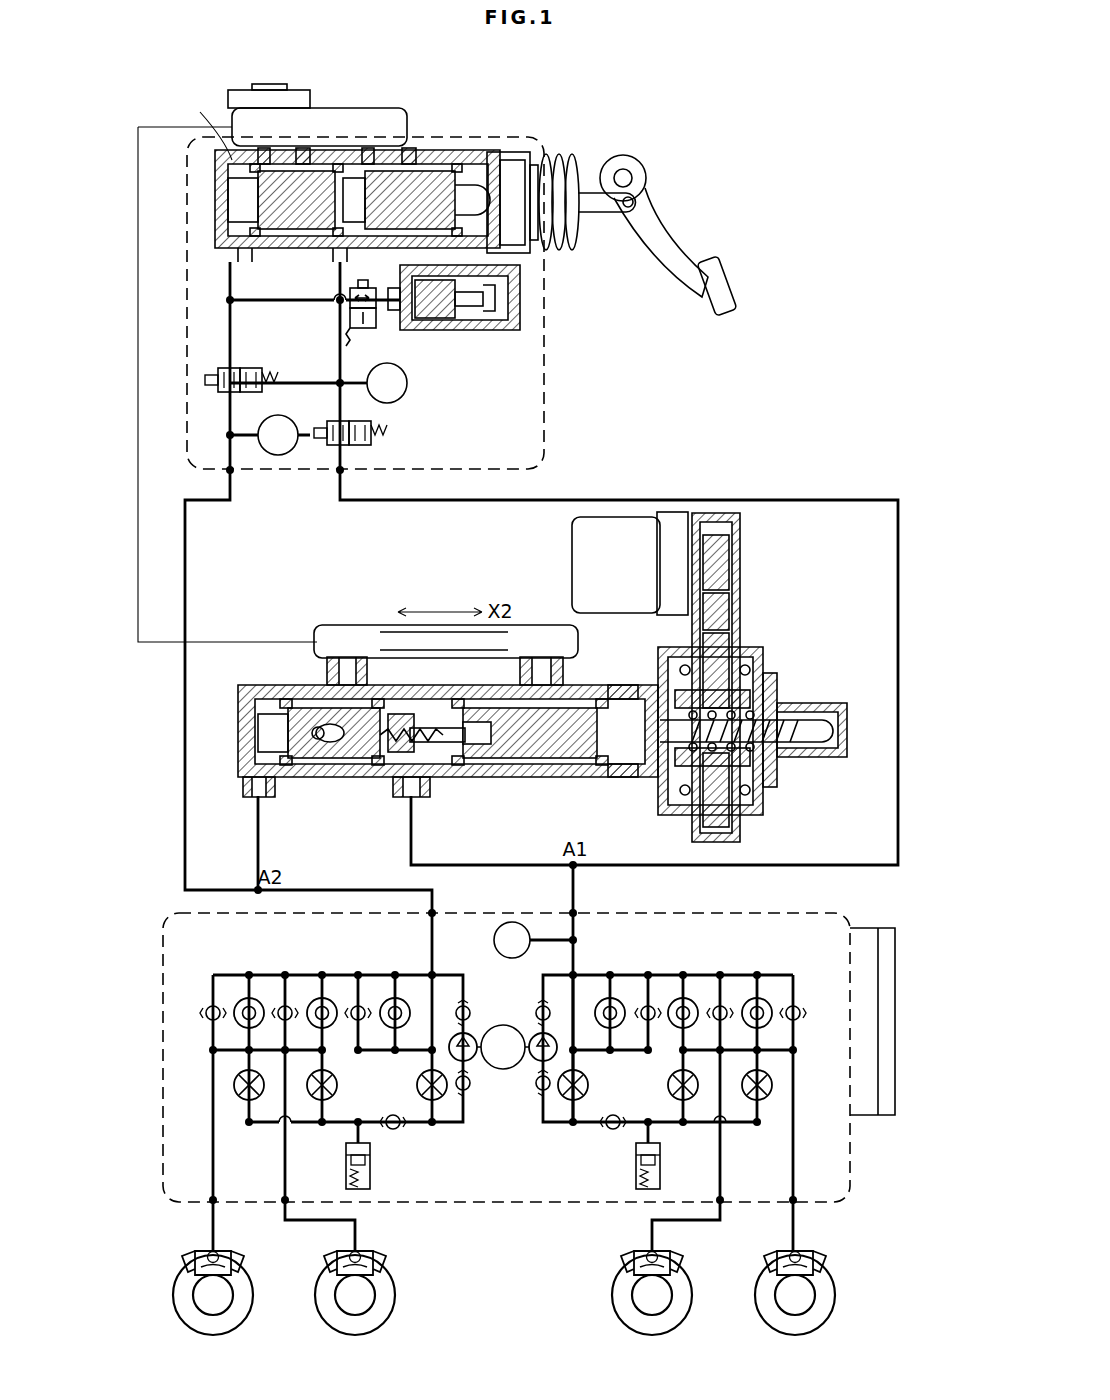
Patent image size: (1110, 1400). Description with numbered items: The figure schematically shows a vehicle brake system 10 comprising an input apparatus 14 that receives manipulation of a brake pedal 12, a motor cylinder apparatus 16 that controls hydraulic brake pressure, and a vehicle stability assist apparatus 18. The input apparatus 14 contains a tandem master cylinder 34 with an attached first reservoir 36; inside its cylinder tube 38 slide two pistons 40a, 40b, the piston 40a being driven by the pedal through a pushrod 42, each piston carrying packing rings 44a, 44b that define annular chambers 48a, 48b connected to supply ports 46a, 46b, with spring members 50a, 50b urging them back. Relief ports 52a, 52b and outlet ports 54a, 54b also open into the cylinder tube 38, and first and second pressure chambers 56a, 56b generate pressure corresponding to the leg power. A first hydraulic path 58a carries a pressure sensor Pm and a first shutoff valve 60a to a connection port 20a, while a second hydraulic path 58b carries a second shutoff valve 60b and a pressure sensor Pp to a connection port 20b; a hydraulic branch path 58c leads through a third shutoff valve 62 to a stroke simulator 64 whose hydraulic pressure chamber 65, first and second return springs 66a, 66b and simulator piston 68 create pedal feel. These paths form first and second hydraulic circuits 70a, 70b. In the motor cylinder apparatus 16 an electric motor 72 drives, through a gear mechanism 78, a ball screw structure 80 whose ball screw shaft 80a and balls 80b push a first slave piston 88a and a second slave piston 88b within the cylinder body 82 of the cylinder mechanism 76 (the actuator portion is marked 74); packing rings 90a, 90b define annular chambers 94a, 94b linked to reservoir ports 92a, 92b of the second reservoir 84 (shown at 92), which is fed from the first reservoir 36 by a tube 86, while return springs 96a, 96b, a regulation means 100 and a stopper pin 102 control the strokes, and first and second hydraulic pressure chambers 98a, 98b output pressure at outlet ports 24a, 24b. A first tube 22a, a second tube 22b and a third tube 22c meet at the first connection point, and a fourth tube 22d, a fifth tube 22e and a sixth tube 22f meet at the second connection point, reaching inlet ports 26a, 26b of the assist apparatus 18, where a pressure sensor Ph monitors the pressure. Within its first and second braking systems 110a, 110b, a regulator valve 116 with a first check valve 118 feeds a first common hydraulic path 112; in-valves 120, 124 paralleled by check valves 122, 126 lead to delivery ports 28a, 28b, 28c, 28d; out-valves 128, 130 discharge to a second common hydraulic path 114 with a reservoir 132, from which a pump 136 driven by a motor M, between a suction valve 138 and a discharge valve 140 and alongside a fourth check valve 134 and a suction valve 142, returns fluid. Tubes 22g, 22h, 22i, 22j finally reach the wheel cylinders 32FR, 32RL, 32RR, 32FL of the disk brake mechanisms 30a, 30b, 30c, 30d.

The vehicle brake system 10 is at (673, 127).
The brake pedal 12 is at (738, 278).
The input apparatus 14 is at (548, 372).
The motor cylinder apparatus 16 is at (761, 577).
The vehicle stability assist apparatus 18 is at (742, 912).
The connection port 20a is at (338, 478).
The connection port 20b is at (232, 478).
The first tube 22a is at (900, 600).
The second tube 22b is at (466, 863).
The third tube 22c is at (575, 888).
The fourth tube 22d is at (184, 677).
The fifth tube 22e is at (256, 846).
The sixth tube 22f is at (394, 888).
The seventh tube 22g is at (798, 1238).
The eighth tube 22h is at (650, 1232).
The ninth tube 22i is at (358, 1232).
The tenth tube 22j is at (210, 1238).
The outlet port 24a is at (418, 800).
The outlet port 24b is at (264, 798).
The inlet port 26a is at (578, 914).
The inlet port 26b is at (436, 912).
The first delivery port 28a is at (797, 1203).
The second delivery port 28b is at (724, 1204).
The third delivery port 28c is at (283, 1205).
The fourth delivery port 28d is at (210, 1203).
The disk brake mechanism 30a is at (841, 1322).
The disk brake mechanism 30b is at (699, 1322).
The disk brake mechanism 30c is at (401, 1322).
The disk brake mechanism 30d is at (257, 1322).
The wheel cylinder 32FL is at (243, 1268).
The wheel cylinder 32RR is at (386, 1268).
The wheel cylinder 32RL is at (683, 1268).
The wheel cylinder 32FR is at (826, 1268).
The master cylinder 34 is at (357, 199).
The first reservoir 36 is at (323, 110).
The cylinder tube 38 is at (462, 162).
The piston 40a is at (428, 185).
The piston 40b is at (290, 185).
The pushrod 42 is at (508, 185).
The packing ring 44a is at (320, 236).
The packing ring 44b is at (272, 236).
The supply port 46a is at (410, 150).
The supply port 46b is at (302, 150).
The annular chamber 48a is at (430, 226).
The annular chamber 48b is at (300, 236).
The spring member 50a is at (348, 160).
The spring member 50b is at (203, 124).
The relief port 52a is at (388, 180).
The relief port 52b is at (265, 172).
The outlet port 54a is at (345, 256).
The outlet port 54b is at (228, 250).
The first pressure chamber 56a is at (395, 200).
The second pressure chamber 56b is at (277, 200).
The first hydraulic path 58a is at (338, 373).
The second hydraulic path 58b is at (210, 299).
The hydraulic branch path 58c is at (290, 303).
The first shutoff valve 60a is at (372, 442).
The second shutoff valve 60b is at (245, 366).
The third shutoff valve 62 is at (378, 324).
The stroke simulator 64 is at (530, 291).
The hydraulic pressure chamber 65 is at (412, 336).
The first return spring 66a is at (498, 336).
The second return spring 66b is at (462, 336).
The simulator piston 68 is at (433, 336).
The first hydraulic circuit 70a is at (653, 487).
The second hydraulic circuit 70b is at (164, 731).
The electric motor 72 is at (572, 545).
The actuator mechanism 74 is at (782, 659).
The cylinder mechanism 76 is at (524, 804).
The gear mechanism 78 is at (740, 602).
The ball screw structure 80 is at (840, 710).
The ball screw shaft 80a is at (785, 746).
The balls 80b is at (760, 702).
The cylinder body 82 is at (620, 688).
The second reservoir 84 is at (525, 625).
The tube 86 is at (136, 375).
The first slave piston 88a is at (568, 762).
The second slave piston 88b is at (352, 762).
The packing ring 90a is at (390, 770).
The packing ring 90b is at (318, 770).
The reservoir 92 is at (446, 641).
The reservoir port 92a is at (570, 648).
The reservoir port 92b is at (347, 680).
The annular chamber 94a is at (542, 767).
The annular chamber 94b is at (338, 762).
The first return spring 96a is at (454, 772).
The second return spring 96b is at (262, 690).
The first hydraulic pressure chamber 98a is at (437, 748).
The second hydraulic pressure chamber 98b is at (270, 731).
The regulation means 100 is at (437, 724).
The stopper pin 102 is at (312, 705).
The first braking system 110a is at (803, 966).
The second braking system 110b is at (212, 966).
The first common hydraulic path 112 is at (298, 968).
The second common hydraulic path 114 is at (303, 1128).
The regulator valve 116 is at (398, 996).
The first check valve 118 is at (355, 1004).
The first in-valve 120 is at (245, 996).
The second check valve 122 is at (208, 1000).
The second in-valve 124 is at (318, 996).
The third check valve 126 is at (282, 1004).
The first out-valve 128 is at (243, 1100).
The second out-valve 130 is at (338, 1082).
The reservoir 132 is at (372, 1180).
The fourth check valve 134 is at (398, 1130).
The pump 136 is at (477, 1058).
The suction valve 138 is at (540, 1095).
The discharge valve 140 is at (534, 1008).
The suction valve 142 is at (452, 1098).
The motor M is at (503, 1047).
The pressure sensor Ph is at (512, 940).
The pressure sensor Pm is at (373, 383).
The pressure sensor Pp is at (278, 435).